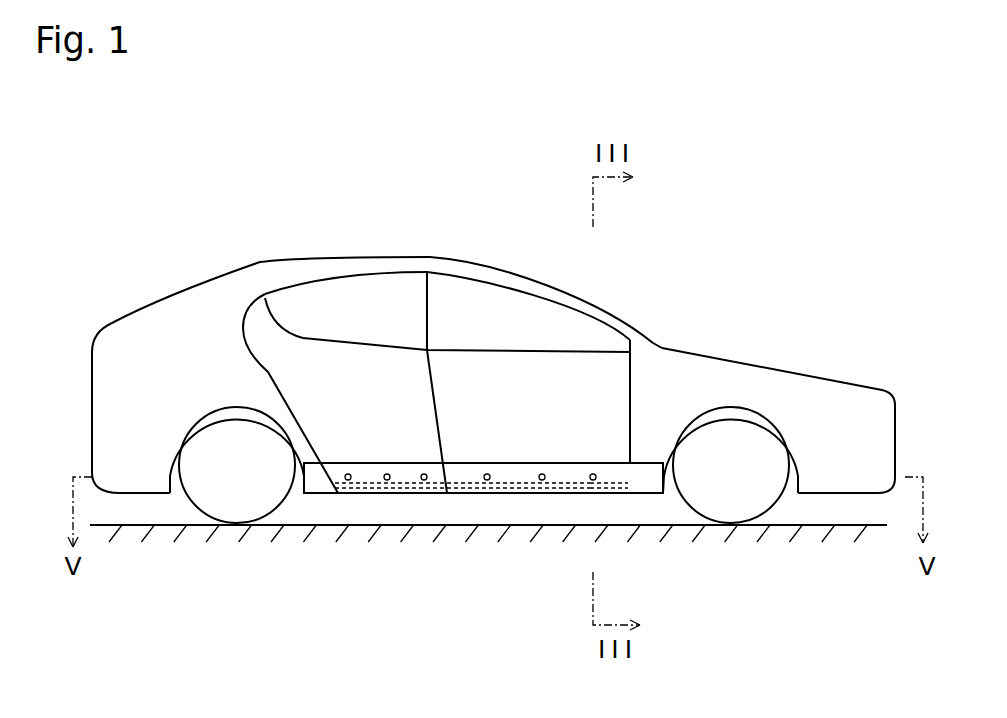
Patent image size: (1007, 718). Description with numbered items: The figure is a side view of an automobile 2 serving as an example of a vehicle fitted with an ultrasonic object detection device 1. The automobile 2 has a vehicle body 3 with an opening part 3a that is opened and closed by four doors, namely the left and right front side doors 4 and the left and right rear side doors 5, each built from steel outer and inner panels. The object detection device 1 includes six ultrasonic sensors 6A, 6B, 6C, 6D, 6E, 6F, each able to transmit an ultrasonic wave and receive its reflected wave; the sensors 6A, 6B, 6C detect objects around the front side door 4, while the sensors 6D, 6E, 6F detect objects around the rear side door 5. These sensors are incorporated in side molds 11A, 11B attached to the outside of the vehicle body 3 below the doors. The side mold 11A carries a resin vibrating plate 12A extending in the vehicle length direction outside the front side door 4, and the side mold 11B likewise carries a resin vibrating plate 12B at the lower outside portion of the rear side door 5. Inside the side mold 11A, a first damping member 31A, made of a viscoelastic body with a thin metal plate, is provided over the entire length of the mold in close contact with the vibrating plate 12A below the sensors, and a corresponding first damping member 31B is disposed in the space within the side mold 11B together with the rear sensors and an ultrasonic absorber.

The ultrasonic object detection device 1 is at (493, 416).
The automobile 2 is at (493, 371).
The vehicle body 3 is at (694, 352).
The opening part 3a is at (620, 375).
The front side door 4 is at (457, 365).
The rear side door 5 is at (298, 362).
The ultrasonic sensor 6A is at (593, 481).
The ultrasonic sensor 6B is at (542, 481).
The ultrasonic sensor 6C is at (487, 481).
The ultrasonic sensor 6D is at (424, 481).
The ultrasonic sensor 6E is at (387, 481).
The ultrasonic sensor 6F is at (348, 481).
The side mold 11A is at (717, 524).
The side mold 11B is at (270, 533).
The vibrating plate 12A is at (625, 489).
The vibrating plate 12B is at (333, 473).
The first damping member 31A is at (625, 475).
The first damping member 31B is at (333, 492).